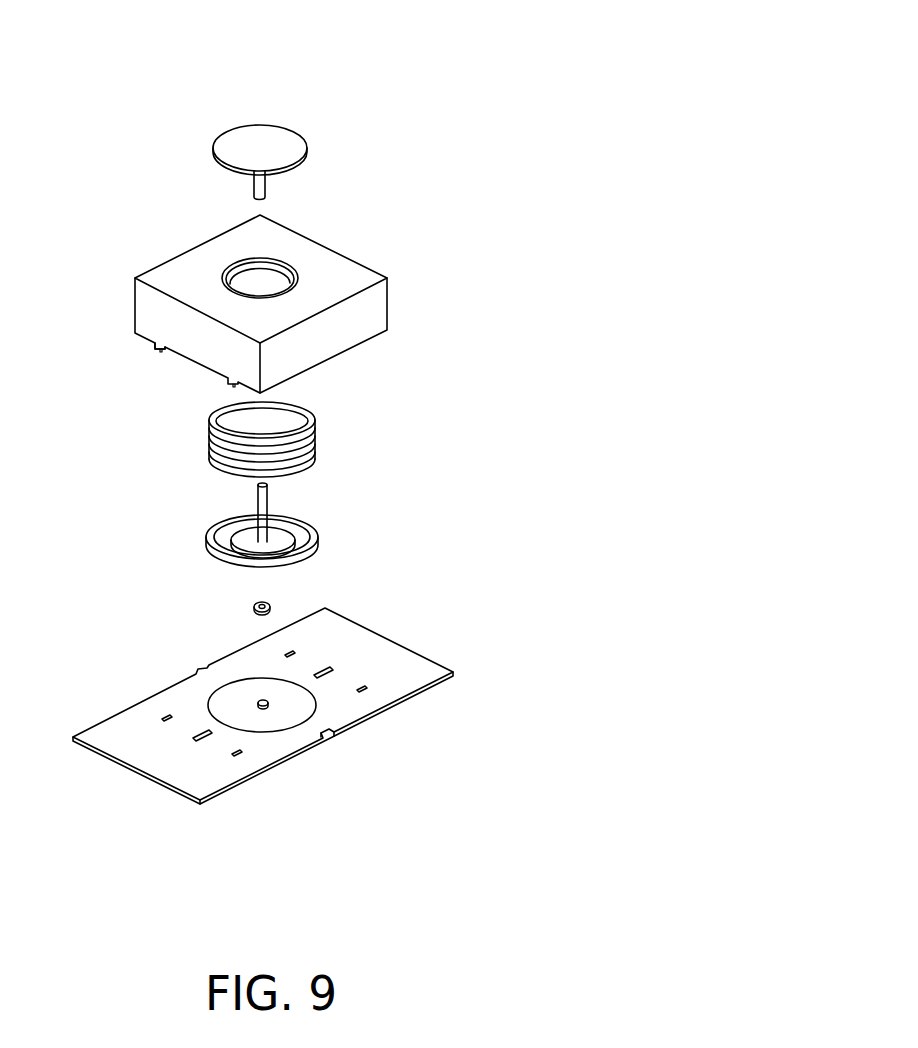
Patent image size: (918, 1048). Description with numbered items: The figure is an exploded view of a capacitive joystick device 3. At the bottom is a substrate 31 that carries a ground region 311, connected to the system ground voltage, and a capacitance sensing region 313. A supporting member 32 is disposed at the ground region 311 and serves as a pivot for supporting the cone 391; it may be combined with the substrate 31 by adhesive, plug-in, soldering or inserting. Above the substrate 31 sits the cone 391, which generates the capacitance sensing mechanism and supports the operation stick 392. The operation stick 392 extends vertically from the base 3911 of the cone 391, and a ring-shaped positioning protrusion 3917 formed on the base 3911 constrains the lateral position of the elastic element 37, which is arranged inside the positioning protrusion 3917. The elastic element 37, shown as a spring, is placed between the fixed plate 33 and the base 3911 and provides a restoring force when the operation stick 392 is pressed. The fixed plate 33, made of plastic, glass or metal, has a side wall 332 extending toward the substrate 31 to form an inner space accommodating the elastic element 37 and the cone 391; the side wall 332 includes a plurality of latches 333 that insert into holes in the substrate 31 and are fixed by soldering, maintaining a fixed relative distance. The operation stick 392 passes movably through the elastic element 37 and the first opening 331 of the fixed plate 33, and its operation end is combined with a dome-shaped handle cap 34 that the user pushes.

The capacitive joystick device 3 is at (522, 46).
The substrate 31 is at (295, 706).
The ground region 311 is at (263, 707).
The capacitance sensing region 313 is at (298, 710).
The supporting member 32 is at (254, 608).
The fixed plate 33 is at (272, 272).
The first opening 331 is at (252, 291).
The side wall 332 is at (375, 308).
The latches 333 is at (158, 350).
The handle cap 34 is at (285, 145).
The elastic element 37 is at (315, 437).
The cone 391 is at (259, 524).
The base 3911 is at (223, 543).
The positioning protrusion 3917 is at (303, 565).
The operation stick 392 is at (265, 505).